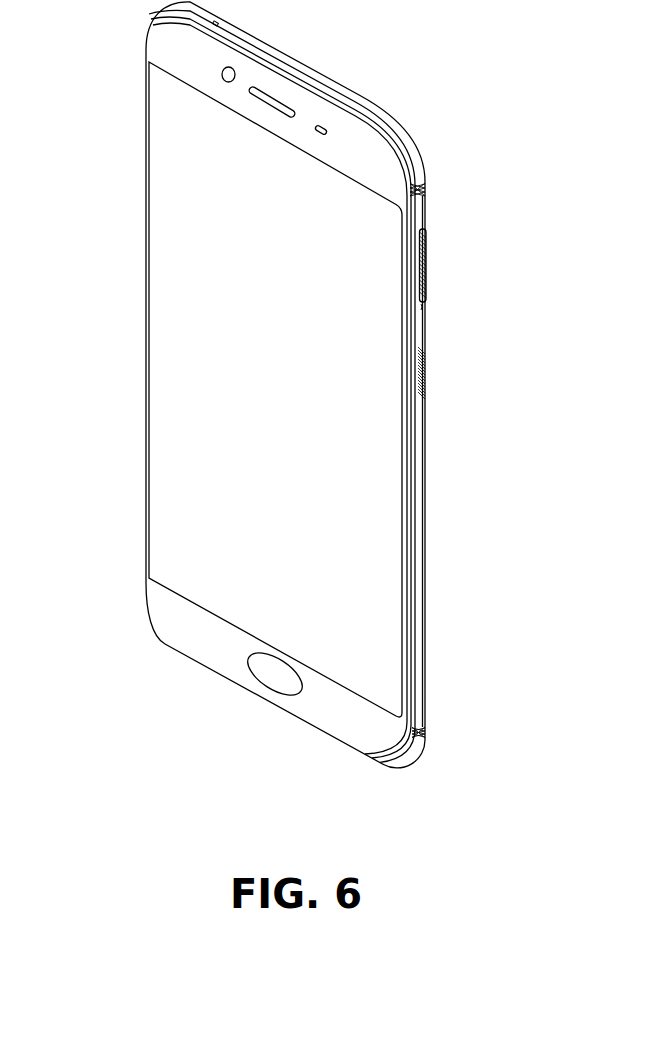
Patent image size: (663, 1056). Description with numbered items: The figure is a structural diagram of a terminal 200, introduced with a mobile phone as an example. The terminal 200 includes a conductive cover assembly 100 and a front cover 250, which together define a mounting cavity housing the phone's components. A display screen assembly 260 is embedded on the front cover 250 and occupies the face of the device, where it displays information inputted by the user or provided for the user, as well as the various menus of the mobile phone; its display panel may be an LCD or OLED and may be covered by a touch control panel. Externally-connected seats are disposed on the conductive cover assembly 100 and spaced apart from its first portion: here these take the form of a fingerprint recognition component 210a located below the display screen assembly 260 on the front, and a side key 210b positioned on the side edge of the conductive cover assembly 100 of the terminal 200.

The terminal 200 is at (105, 62).
The conductive cover assembly 100 is at (412, 153).
The display screen assembly 260 is at (180, 330).
The fingerprint recognition component 210a is at (277, 670).
The side key 210b is at (420, 265).
The front cover 250 is at (412, 347).